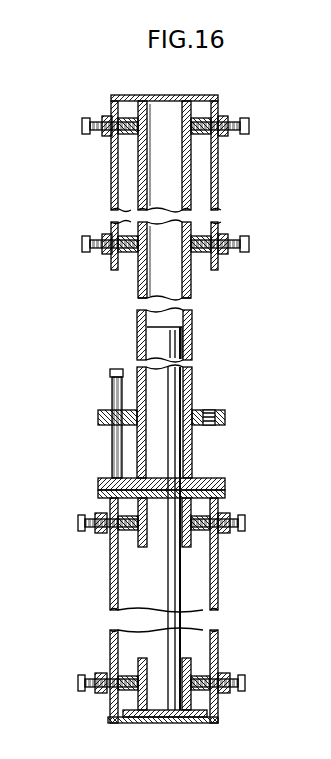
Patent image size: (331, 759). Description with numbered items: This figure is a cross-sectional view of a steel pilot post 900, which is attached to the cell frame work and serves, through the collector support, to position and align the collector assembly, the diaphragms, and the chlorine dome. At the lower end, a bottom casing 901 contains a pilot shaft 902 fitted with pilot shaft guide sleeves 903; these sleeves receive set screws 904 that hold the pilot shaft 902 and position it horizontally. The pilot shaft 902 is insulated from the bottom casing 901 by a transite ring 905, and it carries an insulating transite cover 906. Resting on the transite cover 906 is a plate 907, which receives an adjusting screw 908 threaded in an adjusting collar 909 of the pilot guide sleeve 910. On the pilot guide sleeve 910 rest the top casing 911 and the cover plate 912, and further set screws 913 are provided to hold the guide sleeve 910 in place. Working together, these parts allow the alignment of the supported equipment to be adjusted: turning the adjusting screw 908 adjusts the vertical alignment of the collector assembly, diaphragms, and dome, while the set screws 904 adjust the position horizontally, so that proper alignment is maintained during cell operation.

The pilot post 900 is at (107, 97).
The bottom casing 901 is at (217, 596).
The pilot shaft 902 is at (140, 581).
The pilot shaft guide sleeves 903 is at (193, 543).
The set screws 904 is at (83, 529).
The transite ring 905 is at (208, 714).
The insulating transite cover 906 is at (226, 493).
The plate 907 is at (211, 480).
The adjusting screw 908 is at (114, 400).
The adjusting collar 909 is at (217, 411).
The pilot guide sleeve 910 is at (194, 338).
The top casing 911 is at (112, 165).
The cover plate 912 is at (172, 96).
The set screws 913 is at (80, 132).